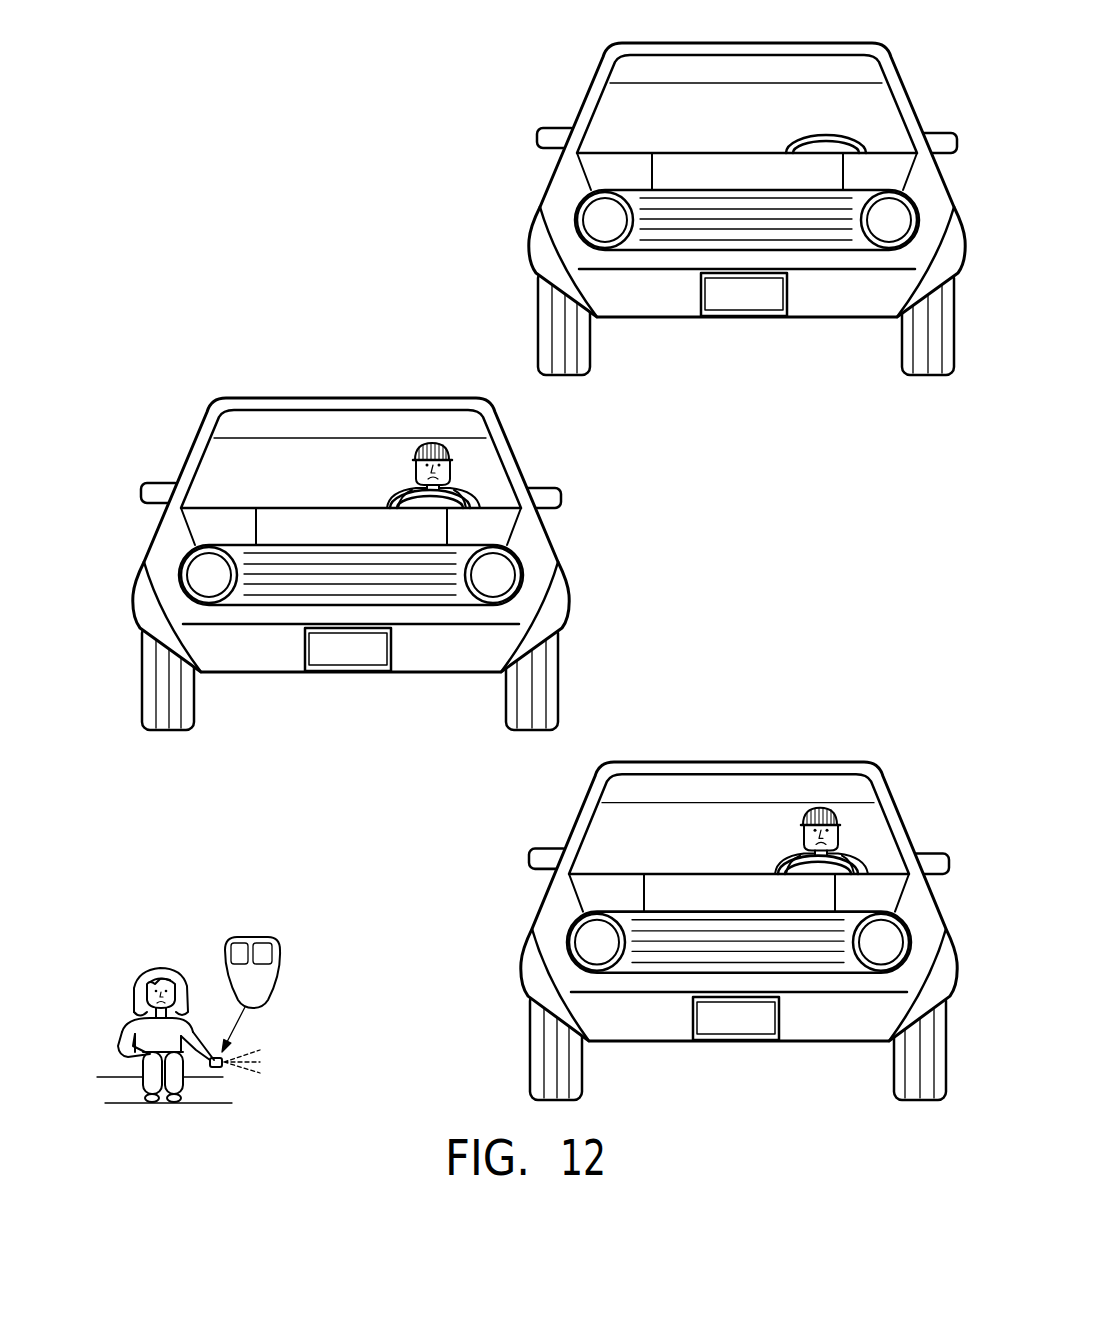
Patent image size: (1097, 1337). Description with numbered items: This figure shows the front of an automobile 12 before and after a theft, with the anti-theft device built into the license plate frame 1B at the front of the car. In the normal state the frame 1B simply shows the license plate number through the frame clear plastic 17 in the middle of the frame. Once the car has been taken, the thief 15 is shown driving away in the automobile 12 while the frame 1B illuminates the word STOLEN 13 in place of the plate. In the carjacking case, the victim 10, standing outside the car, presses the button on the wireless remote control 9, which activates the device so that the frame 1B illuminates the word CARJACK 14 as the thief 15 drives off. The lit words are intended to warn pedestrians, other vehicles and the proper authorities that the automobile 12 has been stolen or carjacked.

The automobile 12 is at (551, 205).
The license plate frame 1B is at (772, 329).
The frame clear plastic 17 is at (733, 315).
The STOLEN display 13 is at (376, 684).
The CARJACK display 14 is at (765, 1052).
The thief 15 is at (474, 466).
The wireless remote control 9 is at (279, 921).
The victim 10 is at (152, 953).